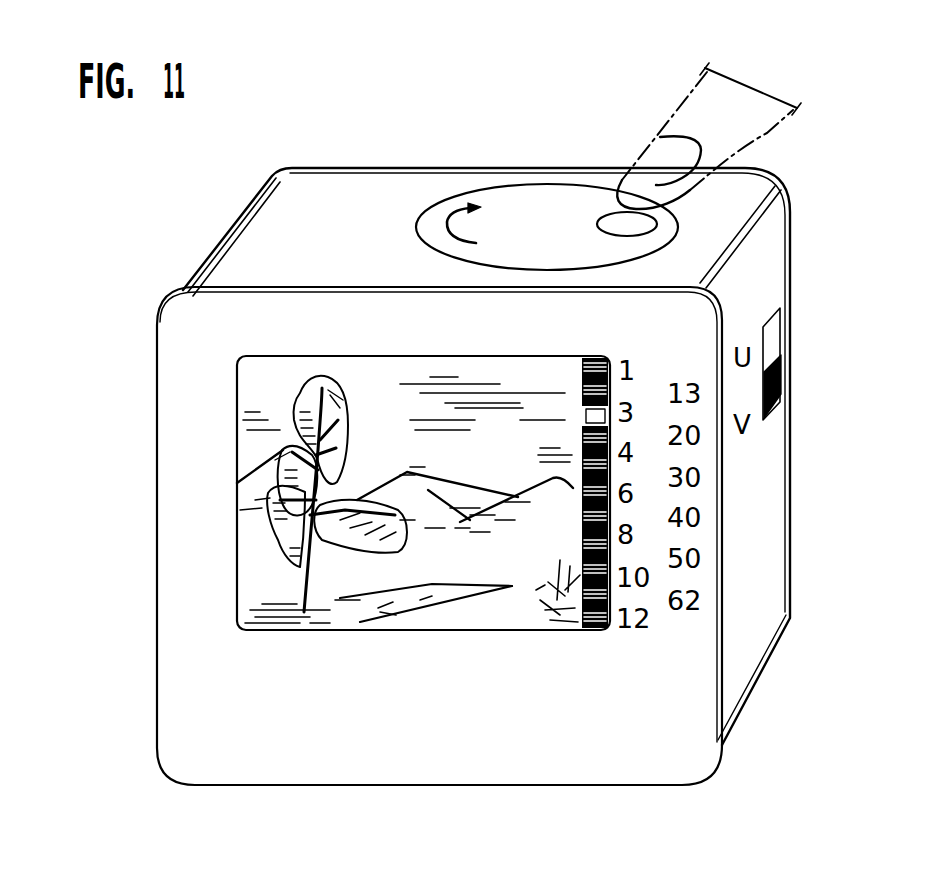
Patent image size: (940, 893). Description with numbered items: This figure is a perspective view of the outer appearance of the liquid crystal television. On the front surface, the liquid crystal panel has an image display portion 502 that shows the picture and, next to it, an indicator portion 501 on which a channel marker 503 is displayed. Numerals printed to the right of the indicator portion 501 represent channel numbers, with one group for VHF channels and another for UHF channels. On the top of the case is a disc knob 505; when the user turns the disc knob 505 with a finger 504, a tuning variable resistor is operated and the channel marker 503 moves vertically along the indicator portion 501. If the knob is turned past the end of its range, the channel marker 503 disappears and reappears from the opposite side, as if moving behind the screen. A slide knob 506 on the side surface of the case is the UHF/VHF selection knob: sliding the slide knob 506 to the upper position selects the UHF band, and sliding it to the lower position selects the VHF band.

The indicator portion 501 is at (610, 636).
The image display portion 502 is at (577, 635).
The channel marker 503 is at (597, 418).
The finger 504 is at (767, 133).
The disc knob 505 is at (519, 188).
The slide knob 506 is at (784, 380).